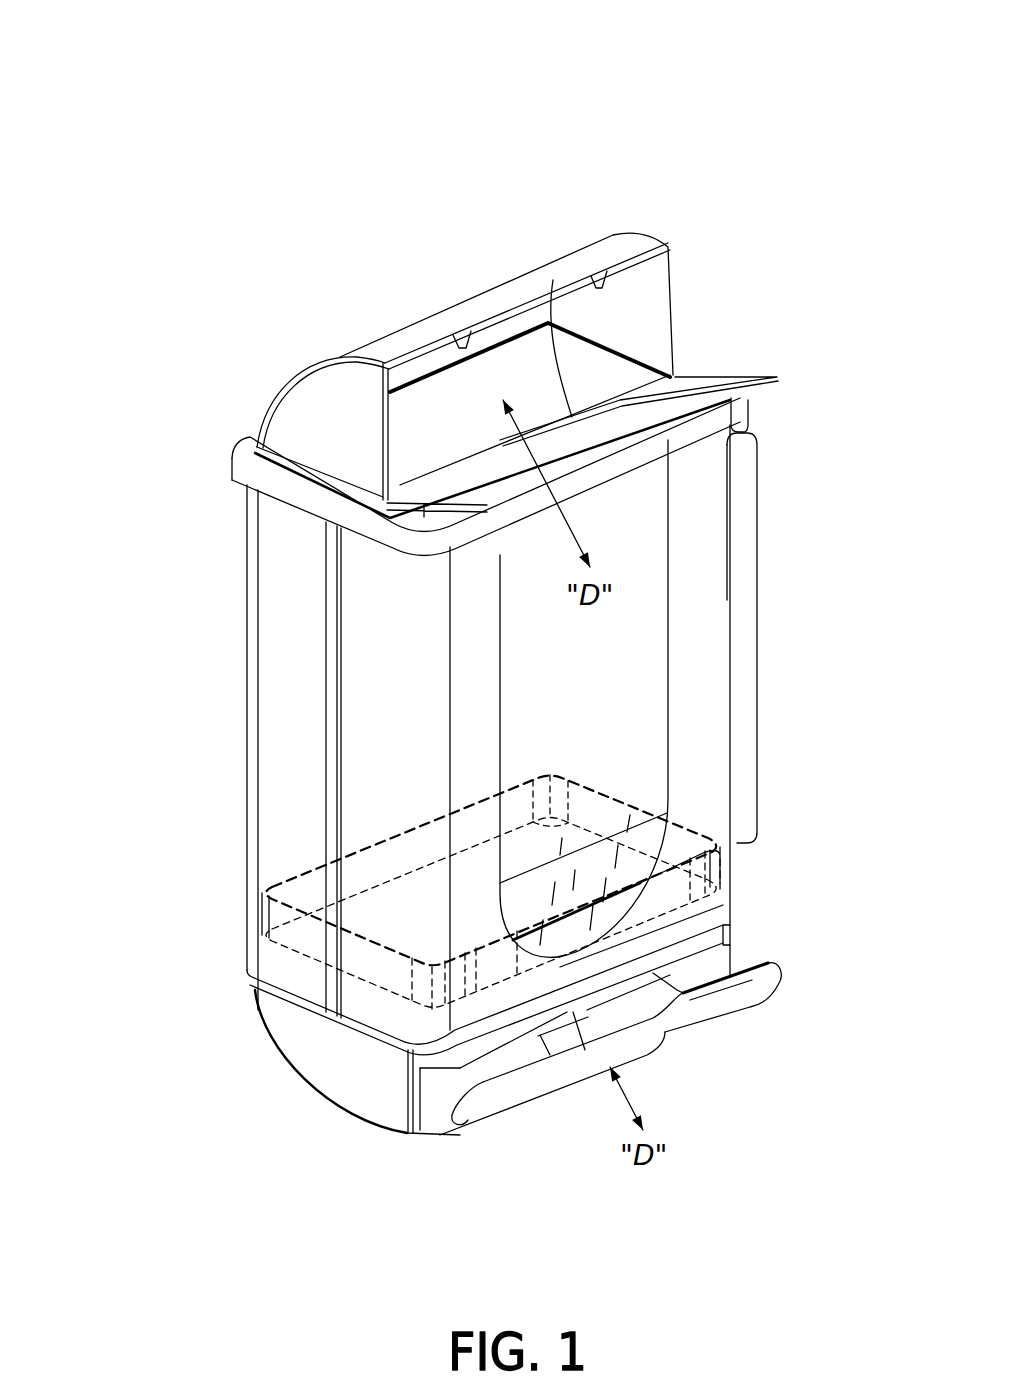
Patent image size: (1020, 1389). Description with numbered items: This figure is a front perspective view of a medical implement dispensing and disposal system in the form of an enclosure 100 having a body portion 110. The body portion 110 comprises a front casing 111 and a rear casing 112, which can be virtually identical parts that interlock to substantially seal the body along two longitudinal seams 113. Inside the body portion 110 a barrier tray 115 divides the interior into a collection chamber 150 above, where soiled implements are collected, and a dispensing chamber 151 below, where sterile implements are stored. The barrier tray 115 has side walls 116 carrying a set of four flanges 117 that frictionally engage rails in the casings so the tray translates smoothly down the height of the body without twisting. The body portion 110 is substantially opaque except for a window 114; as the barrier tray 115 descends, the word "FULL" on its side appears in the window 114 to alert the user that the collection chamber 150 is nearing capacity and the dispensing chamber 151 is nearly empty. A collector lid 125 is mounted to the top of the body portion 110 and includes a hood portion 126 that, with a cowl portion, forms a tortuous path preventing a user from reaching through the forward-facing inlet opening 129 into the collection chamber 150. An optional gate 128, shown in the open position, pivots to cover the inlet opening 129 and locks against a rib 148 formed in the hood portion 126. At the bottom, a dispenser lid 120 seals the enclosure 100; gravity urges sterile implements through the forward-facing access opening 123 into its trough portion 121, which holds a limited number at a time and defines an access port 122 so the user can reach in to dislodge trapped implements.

The enclosure 100 is at (213, 163).
The body portion 110 is at (390, 567).
The front casing 111 is at (410, 770).
The rear casing 112 is at (313, 628).
The longitudinal seams 113 is at (332, 692).
The window 114 is at (708, 853).
The barrier tray 115 is at (250, 975).
The side walls 116 is at (260, 893).
The flanges 117 is at (467, 948).
The dispenser lid 120 is at (358, 1067).
The trough portion 121 is at (440, 1098).
The access port 122 is at (660, 1040).
The access opening 123 is at (427, 1127).
The collector lid 125 is at (553, 283).
The hood portion 126 is at (327, 430).
The gate 128 is at (733, 383).
The inlet opening 129 is at (533, 397).
The rib 148 is at (437, 345).
The collection chamber 150 is at (757, 628).
The dispensing chamber 151 is at (748, 880).